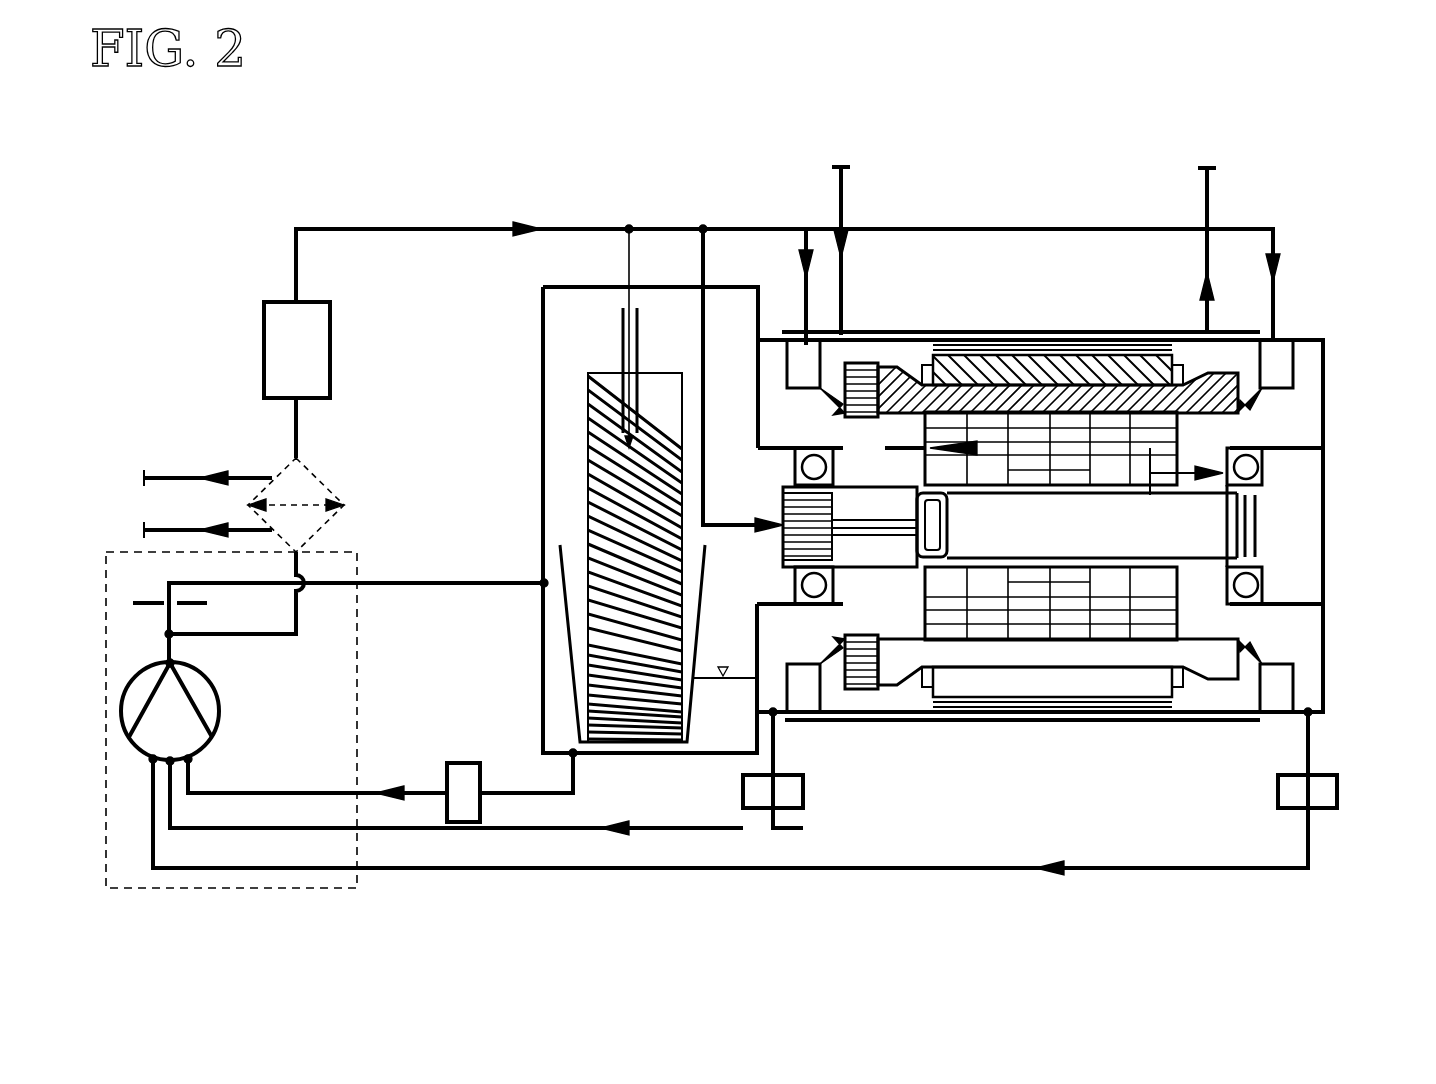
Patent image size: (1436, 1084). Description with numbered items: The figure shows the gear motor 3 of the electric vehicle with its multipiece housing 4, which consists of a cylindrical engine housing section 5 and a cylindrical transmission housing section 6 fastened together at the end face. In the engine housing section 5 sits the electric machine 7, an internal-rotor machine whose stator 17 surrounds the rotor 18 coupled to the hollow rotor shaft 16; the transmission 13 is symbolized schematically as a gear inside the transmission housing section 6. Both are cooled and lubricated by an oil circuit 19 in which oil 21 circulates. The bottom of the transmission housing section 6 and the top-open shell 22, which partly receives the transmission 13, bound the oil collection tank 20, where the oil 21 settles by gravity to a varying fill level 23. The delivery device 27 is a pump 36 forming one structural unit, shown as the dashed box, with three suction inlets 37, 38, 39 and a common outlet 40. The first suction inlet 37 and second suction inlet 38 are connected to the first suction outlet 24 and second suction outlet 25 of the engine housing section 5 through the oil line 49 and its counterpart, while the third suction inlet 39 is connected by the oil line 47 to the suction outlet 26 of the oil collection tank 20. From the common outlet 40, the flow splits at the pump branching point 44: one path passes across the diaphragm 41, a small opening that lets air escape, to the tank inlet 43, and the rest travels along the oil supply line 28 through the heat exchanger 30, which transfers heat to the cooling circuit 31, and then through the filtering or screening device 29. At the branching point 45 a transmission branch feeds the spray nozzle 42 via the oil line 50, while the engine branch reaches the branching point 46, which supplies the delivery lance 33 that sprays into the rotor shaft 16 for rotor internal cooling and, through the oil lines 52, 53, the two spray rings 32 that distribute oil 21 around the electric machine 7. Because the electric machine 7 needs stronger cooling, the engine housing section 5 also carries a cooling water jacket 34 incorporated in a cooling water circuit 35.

The gear motor 3 is at (984, 192).
The housing 4 is at (1089, 462).
The engine housing section 5 is at (1312, 337).
The transmission housing section 6 is at (573, 285).
The electric machine 7 is at (1270, 433).
The transmission 13 is at (590, 472).
The rotor shaft 16 is at (848, 482).
The stator 17 is at (925, 698).
The rotor 18 is at (893, 692).
The oil circuit 19 is at (418, 198).
The oil collection tank 20 is at (528, 710).
The oil 21 is at (707, 736).
The shell 22 is at (710, 565).
The fill level 23 is at (712, 676).
The first suction outlet 24 is at (776, 715).
The second suction outlet 25 is at (1323, 705).
The suction outlet 26 is at (577, 760).
The delivery device 27 is at (153, 550).
The oil supply line 28 is at (298, 432).
The filtering or screening device 29 is at (332, 350).
The heat exchanger 30 is at (325, 520).
The cooling circuit 31 is at (184, 458).
The spray rings 32 is at (822, 360).
The delivery lance 33 is at (847, 572).
The cooling water jacket 34 is at (1048, 330).
The cooling water circuit 35 is at (1209, 182).
The pump 36 is at (220, 712).
The first suction inlet 37 is at (170, 756).
The second suction inlet 38 is at (152, 762).
The third suction inlet 39 is at (192, 757).
The common outlet 40 is at (168, 662).
The diaphragm 41 is at (148, 600).
The spray nozzle 42 is at (638, 340).
The inlet 43 is at (540, 586).
The pump branching point 44 is at (172, 636).
The branching point 45 is at (630, 225).
The branching point 46 is at (704, 226).
The oil line 47 is at (415, 795).
The oil line 49 is at (706, 870).
The oil line 50 is at (627, 270).
The oil line 52 is at (803, 303).
The oil line 53 is at (1275, 302).